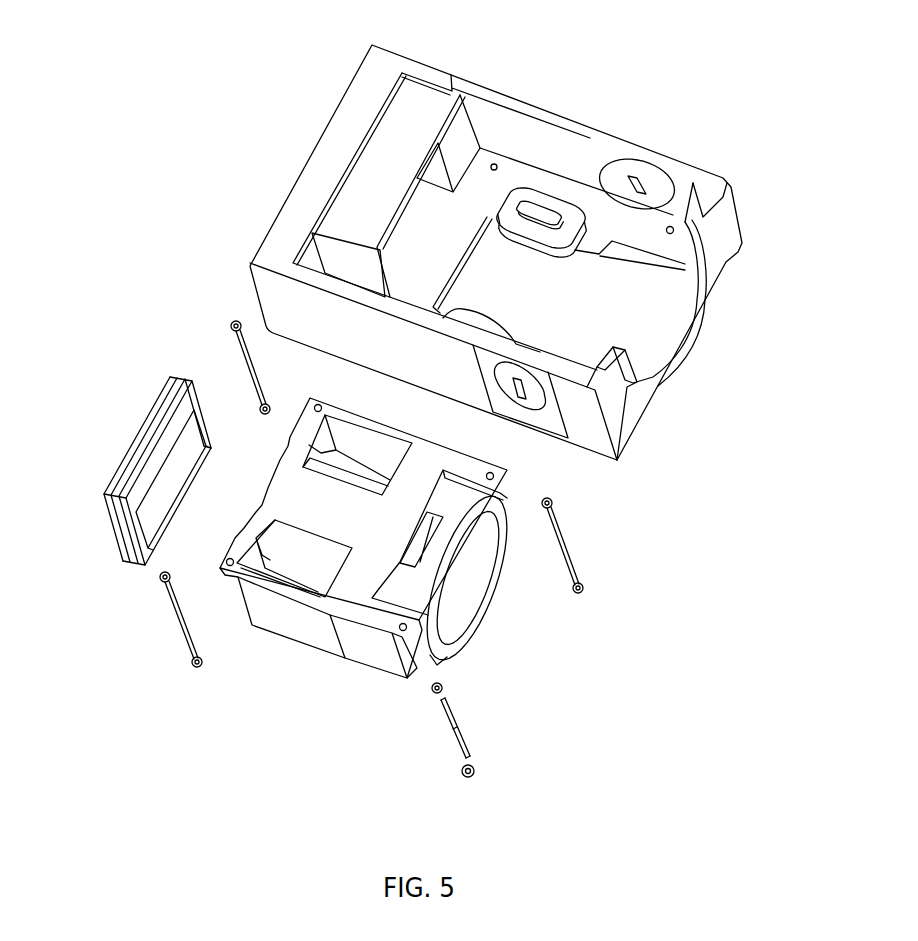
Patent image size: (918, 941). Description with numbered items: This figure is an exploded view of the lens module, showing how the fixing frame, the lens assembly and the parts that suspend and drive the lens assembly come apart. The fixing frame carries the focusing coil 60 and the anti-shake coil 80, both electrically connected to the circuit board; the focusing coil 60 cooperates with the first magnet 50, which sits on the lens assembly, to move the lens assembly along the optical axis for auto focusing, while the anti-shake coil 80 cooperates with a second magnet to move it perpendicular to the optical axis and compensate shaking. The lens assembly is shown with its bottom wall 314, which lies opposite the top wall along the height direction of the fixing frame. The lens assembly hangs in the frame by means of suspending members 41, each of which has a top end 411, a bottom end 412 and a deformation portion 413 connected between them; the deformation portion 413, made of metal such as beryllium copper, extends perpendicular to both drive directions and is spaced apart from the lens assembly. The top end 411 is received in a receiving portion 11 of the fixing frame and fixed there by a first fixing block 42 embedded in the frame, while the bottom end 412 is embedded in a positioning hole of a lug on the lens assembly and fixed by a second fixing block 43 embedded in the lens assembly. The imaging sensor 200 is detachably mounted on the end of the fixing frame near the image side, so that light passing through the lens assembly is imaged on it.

The receiving portion 11 is at (672, 227).
The focusing coil 60 is at (647, 178).
The anti-shake coil 80 is at (536, 193).
The imaging sensor 200 is at (160, 429).
The bottom wall 314 is at (343, 595).
The first magnet 50 is at (375, 656).
The suspending member 41 is at (517, 711).
The top end 411 is at (466, 755).
The bottom end 412 is at (447, 699).
The deformation portion 413 is at (455, 726).
The first fixing block 42 is at (474, 777).
The second fixing block 43 is at (443, 690).